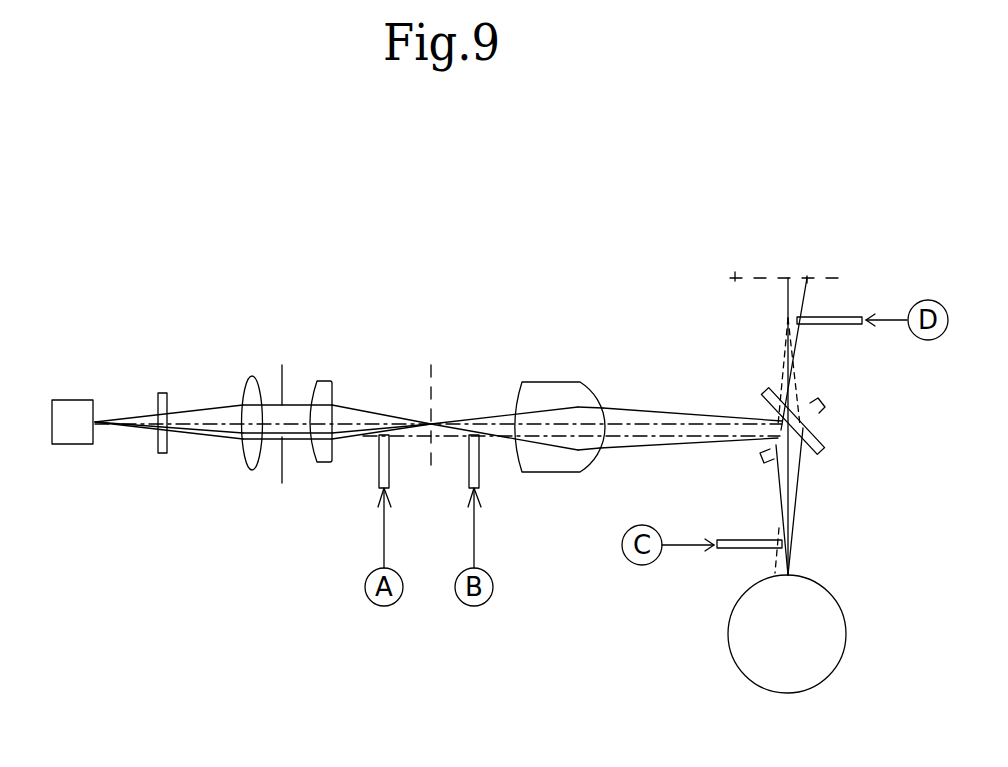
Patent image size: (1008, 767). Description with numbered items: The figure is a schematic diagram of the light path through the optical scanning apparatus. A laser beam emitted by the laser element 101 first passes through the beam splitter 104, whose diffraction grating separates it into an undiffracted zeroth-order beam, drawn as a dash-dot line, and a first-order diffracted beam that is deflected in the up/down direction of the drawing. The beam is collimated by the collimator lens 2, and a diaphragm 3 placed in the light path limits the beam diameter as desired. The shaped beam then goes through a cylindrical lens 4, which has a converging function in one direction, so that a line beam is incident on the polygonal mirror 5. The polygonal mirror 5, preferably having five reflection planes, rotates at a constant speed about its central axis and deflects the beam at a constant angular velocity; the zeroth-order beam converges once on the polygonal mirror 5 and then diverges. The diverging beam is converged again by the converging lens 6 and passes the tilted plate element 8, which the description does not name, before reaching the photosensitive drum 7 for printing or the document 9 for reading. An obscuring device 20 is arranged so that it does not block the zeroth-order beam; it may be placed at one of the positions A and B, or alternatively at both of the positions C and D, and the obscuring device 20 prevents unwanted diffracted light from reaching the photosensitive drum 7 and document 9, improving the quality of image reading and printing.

The laser element 101 is at (62, 412).
The beam splitter 104 is at (162, 395).
The collimator lens 2 is at (247, 393).
The diaphragm 3 is at (282, 377).
The cylindrical lens 4 is at (328, 395).
The polygonal mirror 5 is at (432, 383).
The converging lens 6 is at (567, 388).
The photosensitive drum 7 is at (745, 642).
The beam splitter 8 is at (818, 441).
The document 9 is at (735, 277).
The obscuring device 20 is at (378, 468).